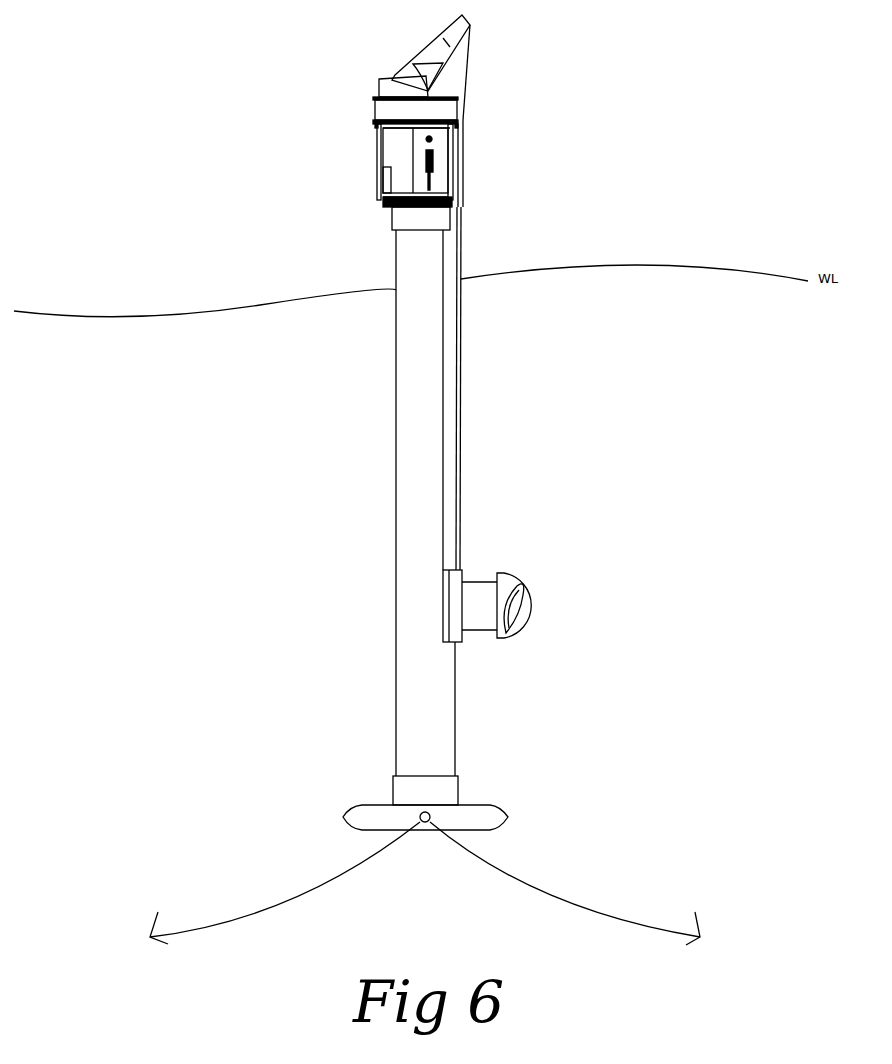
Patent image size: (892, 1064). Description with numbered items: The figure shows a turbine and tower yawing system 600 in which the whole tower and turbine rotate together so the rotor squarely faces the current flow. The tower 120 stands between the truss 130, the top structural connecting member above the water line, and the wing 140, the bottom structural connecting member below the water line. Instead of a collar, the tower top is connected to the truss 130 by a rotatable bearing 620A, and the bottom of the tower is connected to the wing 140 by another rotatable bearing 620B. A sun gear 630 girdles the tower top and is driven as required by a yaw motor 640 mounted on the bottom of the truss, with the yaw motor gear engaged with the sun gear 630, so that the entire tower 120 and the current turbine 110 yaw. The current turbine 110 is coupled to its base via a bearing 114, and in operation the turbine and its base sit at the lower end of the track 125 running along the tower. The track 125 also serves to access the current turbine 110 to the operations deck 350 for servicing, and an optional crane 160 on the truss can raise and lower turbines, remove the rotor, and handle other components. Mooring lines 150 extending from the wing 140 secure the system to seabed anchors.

The turbine and tower yawing system 600 is at (385, 572).
The crane 160 is at (418, 53).
The truss 130 is at (378, 163).
The yaw motor 640 is at (380, 177).
The sun gear 630 is at (380, 195).
The operations deck 350 is at (464, 180).
The rotatable bearing 620A is at (460, 210).
The track 125 is at (462, 373).
The tower 120 is at (396, 428).
The bearing 114 is at (482, 576).
The current turbine 110 is at (550, 590).
The rotatable bearing 620B is at (460, 790).
The wing 140 is at (508, 817).
The mooring lines 150 is at (290, 902).